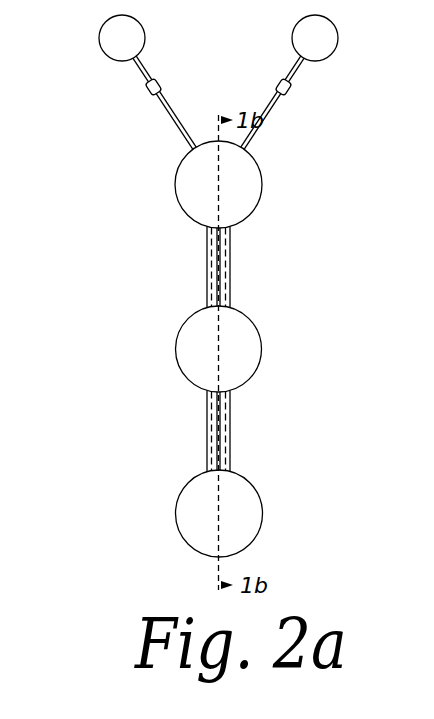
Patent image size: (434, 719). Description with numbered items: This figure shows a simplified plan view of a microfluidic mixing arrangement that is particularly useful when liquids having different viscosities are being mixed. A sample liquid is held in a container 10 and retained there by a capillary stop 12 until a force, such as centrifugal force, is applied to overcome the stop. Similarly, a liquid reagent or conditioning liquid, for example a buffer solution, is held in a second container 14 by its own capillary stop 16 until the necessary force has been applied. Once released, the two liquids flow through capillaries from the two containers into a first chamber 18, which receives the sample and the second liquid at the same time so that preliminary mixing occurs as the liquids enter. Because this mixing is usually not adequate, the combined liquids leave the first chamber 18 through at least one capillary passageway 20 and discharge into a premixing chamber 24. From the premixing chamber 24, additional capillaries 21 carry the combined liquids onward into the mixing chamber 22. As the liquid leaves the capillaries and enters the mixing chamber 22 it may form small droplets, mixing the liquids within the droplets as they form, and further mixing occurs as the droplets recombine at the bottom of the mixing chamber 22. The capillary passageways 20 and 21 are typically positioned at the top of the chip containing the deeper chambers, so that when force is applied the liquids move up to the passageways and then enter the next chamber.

The container 10 is at (122, 38).
The capillary stop 12 is at (146, 89).
The container 14 is at (315, 38).
The capillary stop 16 is at (291, 86).
The first chamber 18 is at (218, 184).
The capillary passageway 20 is at (221, 249).
The capillary 21 is at (221, 405).
The mixing chamber 22 is at (219, 513).
The premixing chamber 24 is at (219, 349).